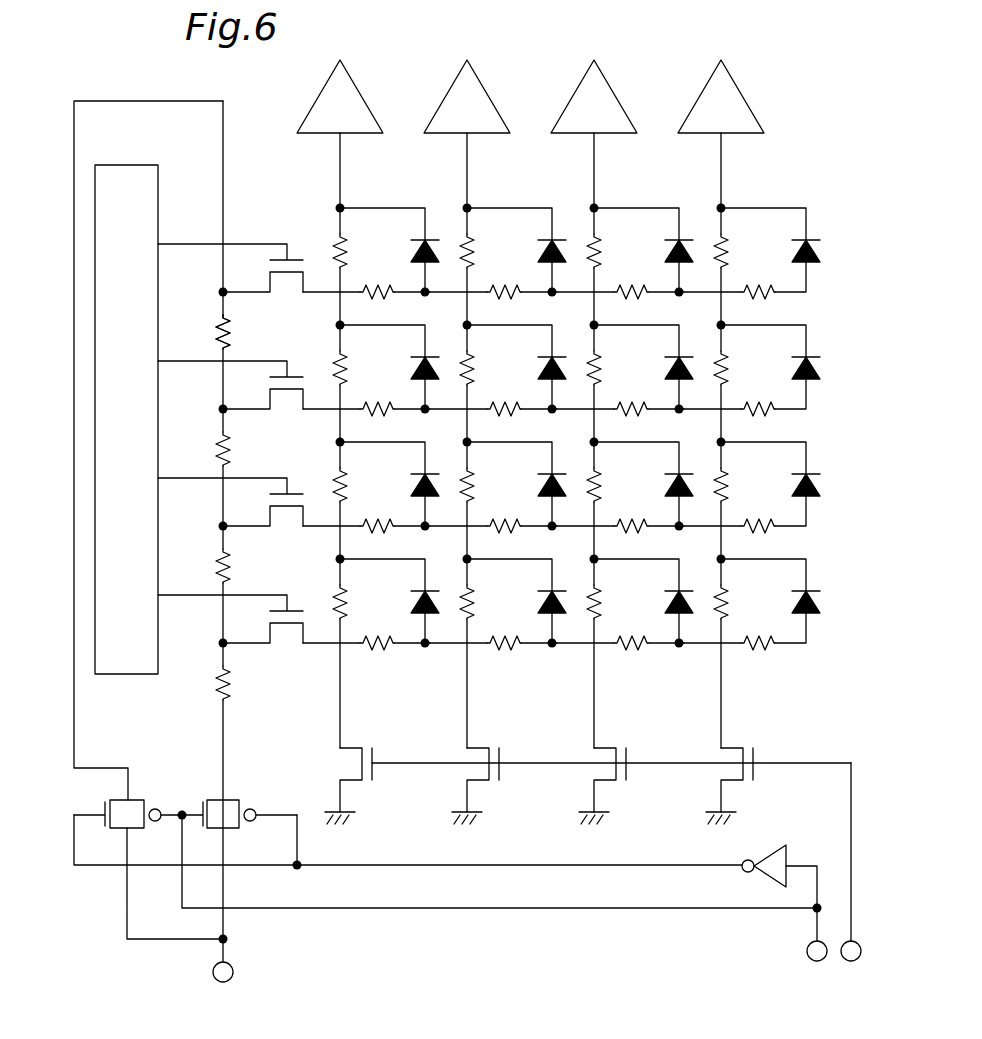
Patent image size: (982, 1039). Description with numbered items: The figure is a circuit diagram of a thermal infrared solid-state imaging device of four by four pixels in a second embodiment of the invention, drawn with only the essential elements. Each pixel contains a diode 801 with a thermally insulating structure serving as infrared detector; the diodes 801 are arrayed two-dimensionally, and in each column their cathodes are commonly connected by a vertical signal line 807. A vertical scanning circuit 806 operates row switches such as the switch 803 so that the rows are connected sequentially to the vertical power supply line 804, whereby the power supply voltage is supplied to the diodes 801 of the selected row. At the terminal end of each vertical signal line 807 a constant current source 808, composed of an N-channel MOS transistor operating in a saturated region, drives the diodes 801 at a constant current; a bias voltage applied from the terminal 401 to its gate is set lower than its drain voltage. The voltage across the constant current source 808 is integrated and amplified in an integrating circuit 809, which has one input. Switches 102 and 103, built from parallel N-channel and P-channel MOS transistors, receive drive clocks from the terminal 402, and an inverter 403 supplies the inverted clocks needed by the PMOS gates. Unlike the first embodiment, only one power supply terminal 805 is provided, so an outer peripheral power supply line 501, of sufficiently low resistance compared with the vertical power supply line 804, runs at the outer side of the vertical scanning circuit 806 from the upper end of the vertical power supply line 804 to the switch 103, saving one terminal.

The outer peripheral power supply line 501 is at (78, 136).
The vertical scanning circuit 806 is at (130, 677).
The vertical power supply line 804 is at (220, 310).
The switch 803 is at (281, 653).
The integrating circuit 809 is at (745, 98).
The diode 801 is at (812, 252).
The vertical signal line 807 is at (718, 688).
The constant current source 808 is at (730, 746).
The switch 103 is at (138, 800).
The switch 102 is at (236, 800).
The power supply terminal 805 is at (210, 972).
The inverter 403 is at (768, 882).
The terminal 402 is at (804, 955).
The terminal 401 is at (851, 964).